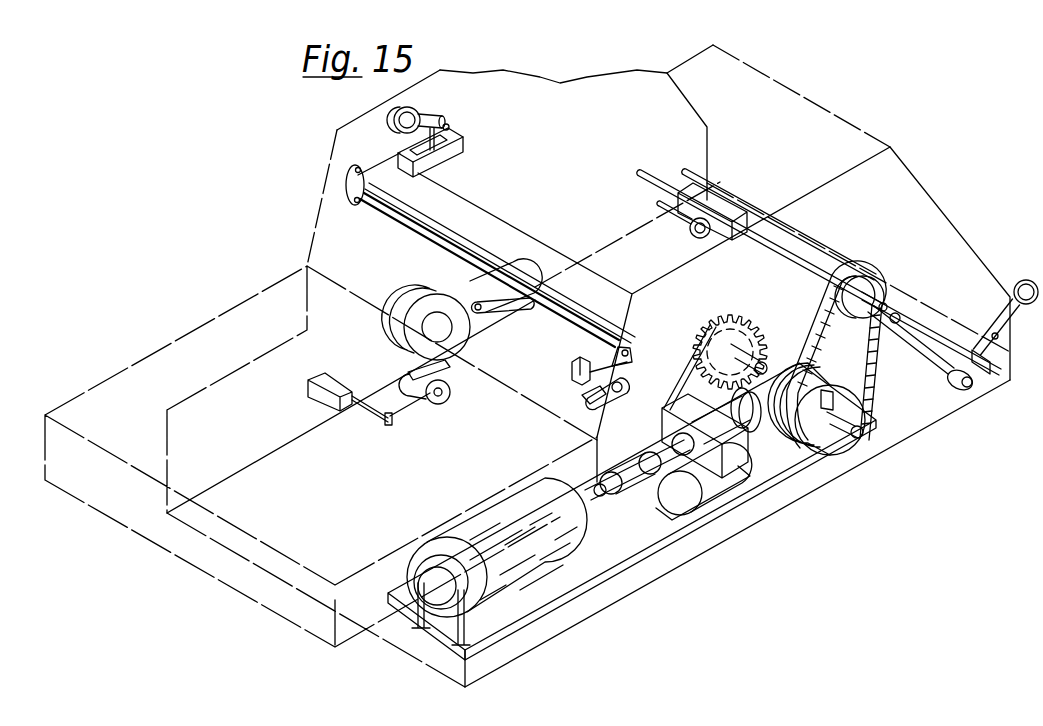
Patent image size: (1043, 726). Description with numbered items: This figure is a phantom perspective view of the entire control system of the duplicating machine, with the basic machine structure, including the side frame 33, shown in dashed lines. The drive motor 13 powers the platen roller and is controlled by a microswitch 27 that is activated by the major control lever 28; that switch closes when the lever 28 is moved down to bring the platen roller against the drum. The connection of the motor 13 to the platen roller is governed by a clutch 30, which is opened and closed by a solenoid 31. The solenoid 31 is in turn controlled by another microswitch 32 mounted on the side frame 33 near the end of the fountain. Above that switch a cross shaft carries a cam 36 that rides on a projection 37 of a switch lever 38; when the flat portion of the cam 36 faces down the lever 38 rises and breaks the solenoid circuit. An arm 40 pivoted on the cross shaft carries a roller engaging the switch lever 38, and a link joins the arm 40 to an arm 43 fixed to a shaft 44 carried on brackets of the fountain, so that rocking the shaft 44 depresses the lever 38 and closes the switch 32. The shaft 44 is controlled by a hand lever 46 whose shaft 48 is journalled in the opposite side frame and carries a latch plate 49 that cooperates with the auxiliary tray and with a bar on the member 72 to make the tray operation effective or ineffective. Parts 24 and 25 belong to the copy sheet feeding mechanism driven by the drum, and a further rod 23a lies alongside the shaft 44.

The drive motor 13 is at (522, 535).
The guide rod 23a is at (524, 261).
The copy sheet feeding mechanism part 24 is at (474, 296).
The copy sheet feeding mechanism part 25 is at (414, 347).
The microswitch 27 is at (732, 198).
The major control lever 28 is at (1023, 281).
The clutch 30 is at (776, 428).
The solenoid 31 is at (692, 501).
The microswitch 32 is at (460, 142).
The side frame 33 is at (572, 123).
The cam 36 is at (406, 123).
The projection 37 is at (450, 151).
The switch lever 38 is at (450, 128).
The arm 40 is at (436, 120).
The arm 43 is at (350, 199).
The shaft 44 is at (489, 270).
The hand lever 46 is at (609, 398).
The shaft 48 is at (592, 397).
The latch plate 49 is at (579, 362).
The member 72 is at (631, 364).